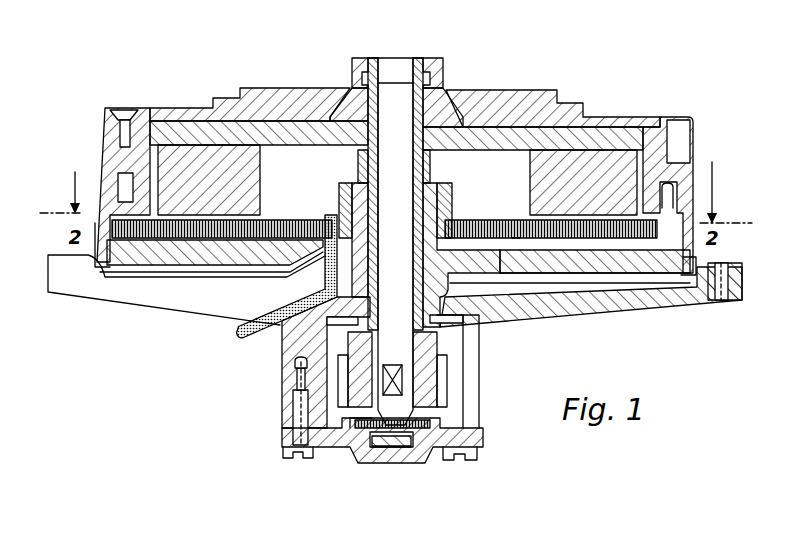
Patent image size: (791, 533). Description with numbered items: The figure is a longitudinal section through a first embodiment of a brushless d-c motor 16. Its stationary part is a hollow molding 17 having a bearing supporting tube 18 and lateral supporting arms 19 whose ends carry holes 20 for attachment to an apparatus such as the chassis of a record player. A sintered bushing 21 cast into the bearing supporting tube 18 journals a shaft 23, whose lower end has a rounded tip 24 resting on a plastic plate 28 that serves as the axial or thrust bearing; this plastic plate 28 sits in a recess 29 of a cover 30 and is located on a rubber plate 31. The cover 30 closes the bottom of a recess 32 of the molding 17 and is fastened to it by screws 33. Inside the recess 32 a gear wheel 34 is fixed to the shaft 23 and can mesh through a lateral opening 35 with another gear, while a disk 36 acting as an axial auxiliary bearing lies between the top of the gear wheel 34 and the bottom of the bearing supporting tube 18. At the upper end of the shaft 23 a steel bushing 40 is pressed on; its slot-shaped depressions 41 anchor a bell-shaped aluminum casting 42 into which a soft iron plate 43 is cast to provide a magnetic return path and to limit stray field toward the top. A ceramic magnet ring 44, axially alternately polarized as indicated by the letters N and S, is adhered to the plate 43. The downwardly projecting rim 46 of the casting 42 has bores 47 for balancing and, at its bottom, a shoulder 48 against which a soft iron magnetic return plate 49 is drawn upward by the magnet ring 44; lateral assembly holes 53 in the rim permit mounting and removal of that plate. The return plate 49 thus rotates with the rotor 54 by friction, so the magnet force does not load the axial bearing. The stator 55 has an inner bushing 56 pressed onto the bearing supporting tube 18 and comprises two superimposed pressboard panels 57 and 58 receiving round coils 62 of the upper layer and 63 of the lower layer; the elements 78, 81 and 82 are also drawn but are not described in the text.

The brushless d-c motor 16 is at (84, 114).
The hollow molding 17 is at (297, 342).
The bearing supporting tube 18 is at (362, 170).
The lateral supporting arms 19 is at (103, 286).
The holes 20 is at (720, 302).
The sintered bushing 21 is at (431, 163).
The shaft 23 is at (386, 256).
The rounded tip 24 is at (353, 414).
The plastic plate 28 is at (423, 431).
The recess 29 is at (403, 448).
The cover 30 is at (434, 464).
The rubber plate 31 is at (375, 432).
The recess 32 is at (298, 388).
The screws 33 is at (286, 452).
The gear wheel 34 is at (433, 393).
The lateral opening 35 is at (470, 378).
The disk 36 is at (445, 325).
The steel bushing 40 is at (416, 58).
The slot-shaped depressions 41 is at (446, 100).
The aluminum casting 42 is at (570, 110).
The soft iron plate 43 is at (542, 140).
The magnet ring 44 is at (177, 157).
The rim 46 is at (686, 204).
The bores 47 is at (692, 148).
The shoulder 48 is at (686, 258).
The magnetic return plate 49 is at (190, 252).
The lateral assembly holes 53 is at (100, 237).
The rotor 54 is at (678, 122).
The stator 55 is at (519, 223).
The inner bushing 56 is at (339, 195).
The pressboard panel 57 is at (138, 238).
The pressboard panel 58 is at (112, 195).
The round coils 62 is at (512, 230).
The round coils 63 is at (650, 274).
The connecting lead 78 is at (245, 337).
The air gap 81 is at (515, 285).
The coil 82 is at (573, 238).